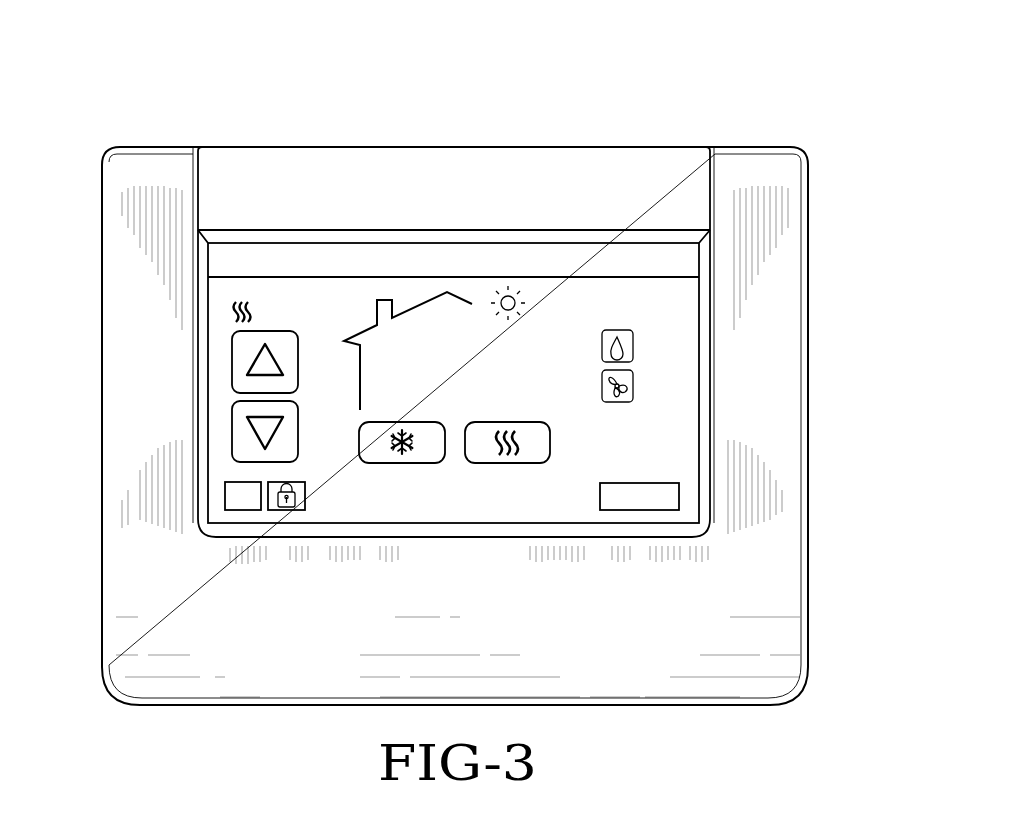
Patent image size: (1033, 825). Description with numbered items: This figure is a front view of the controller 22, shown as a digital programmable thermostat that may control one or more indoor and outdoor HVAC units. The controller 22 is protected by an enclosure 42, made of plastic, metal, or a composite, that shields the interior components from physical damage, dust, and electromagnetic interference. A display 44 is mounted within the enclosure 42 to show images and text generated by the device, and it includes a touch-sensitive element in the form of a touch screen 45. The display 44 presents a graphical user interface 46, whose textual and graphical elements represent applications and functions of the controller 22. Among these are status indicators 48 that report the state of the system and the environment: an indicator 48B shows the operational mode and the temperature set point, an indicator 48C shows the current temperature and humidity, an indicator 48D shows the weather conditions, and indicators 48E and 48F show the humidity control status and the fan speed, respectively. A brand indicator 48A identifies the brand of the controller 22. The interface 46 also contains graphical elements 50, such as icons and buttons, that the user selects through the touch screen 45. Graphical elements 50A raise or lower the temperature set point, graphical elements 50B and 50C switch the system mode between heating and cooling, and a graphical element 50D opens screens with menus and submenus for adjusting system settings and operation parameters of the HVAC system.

The controller 22 is at (212, 118).
The enclosure 42 is at (808, 212).
The display 44 is at (700, 470).
The touch screen 45 is at (640, 452).
The graphical user interface 46 is at (220, 355).
The status indicators 48 is at (300, 249).
The brand indicator 48A is at (632, 247).
The indicator 48B is at (220, 308).
The indicator 48C is at (493, 368).
The indicator 48D is at (523, 283).
The indicator 48E is at (634, 333).
The indicator 48F is at (634, 373).
The graphical elements 50 is at (243, 511).
The graphical elements 50A is at (250, 363).
The graphical element 50B is at (505, 463).
The graphical element 50C is at (402, 463).
The graphical element 50D is at (648, 511).